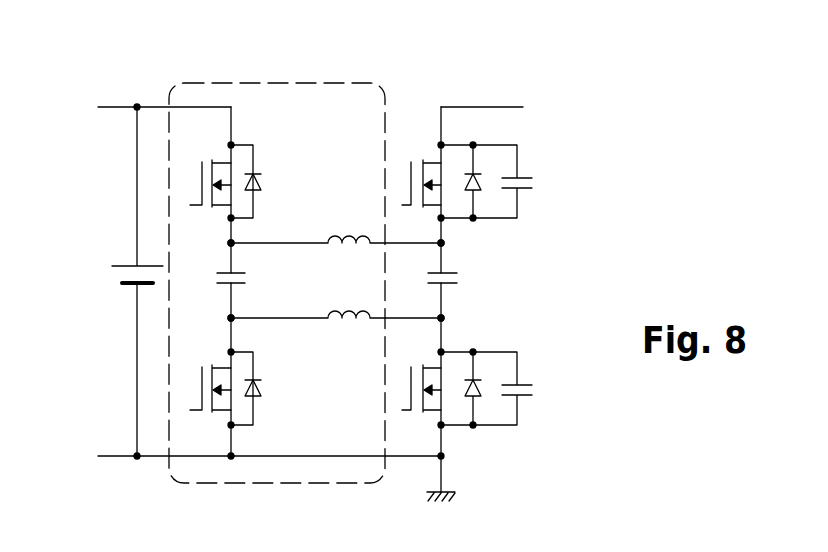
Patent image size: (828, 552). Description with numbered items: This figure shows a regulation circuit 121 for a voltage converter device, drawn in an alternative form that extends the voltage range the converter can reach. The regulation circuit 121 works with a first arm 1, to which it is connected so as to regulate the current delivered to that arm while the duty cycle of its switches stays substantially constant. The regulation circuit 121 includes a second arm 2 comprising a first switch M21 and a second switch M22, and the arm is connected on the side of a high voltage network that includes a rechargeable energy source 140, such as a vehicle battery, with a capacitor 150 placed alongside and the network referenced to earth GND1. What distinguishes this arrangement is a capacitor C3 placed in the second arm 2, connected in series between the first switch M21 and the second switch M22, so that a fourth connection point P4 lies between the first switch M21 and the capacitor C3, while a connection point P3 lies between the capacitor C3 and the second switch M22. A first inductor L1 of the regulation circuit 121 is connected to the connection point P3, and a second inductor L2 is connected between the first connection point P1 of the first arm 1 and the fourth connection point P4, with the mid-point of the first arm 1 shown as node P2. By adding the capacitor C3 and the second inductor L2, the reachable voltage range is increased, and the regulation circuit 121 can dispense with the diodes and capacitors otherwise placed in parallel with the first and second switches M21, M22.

The regulation circuit 121 is at (357, 85).
The second arm 2 is at (238, 123).
The first arm 1 is at (437, 123).
The rechargeable energy source 140 is at (122, 271).
The capacitor 150 is at (458, 279).
The first switch M21 is at (217, 165).
The second switch M22 is at (218, 412).
The capacitor C3 is at (214, 280).
The first inductor L1 is at (336, 329).
The second inductor L2 is at (336, 254).
The first connection point P1 is at (441, 245).
The node P2 is at (441, 320).
The connection point P3 is at (231, 320).
The fourth connection point P4 is at (231, 245).
The earth GND1 is at (455, 495).